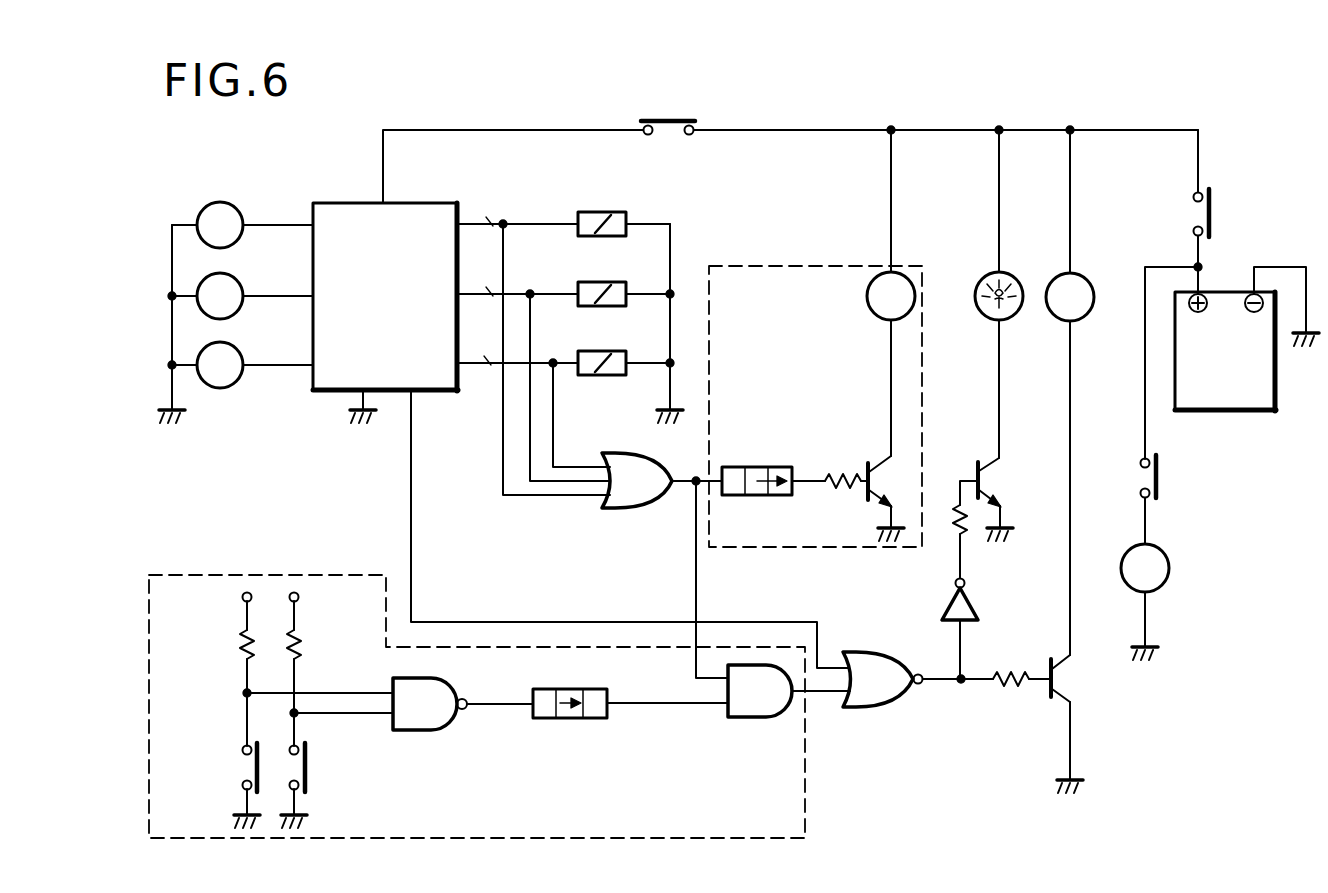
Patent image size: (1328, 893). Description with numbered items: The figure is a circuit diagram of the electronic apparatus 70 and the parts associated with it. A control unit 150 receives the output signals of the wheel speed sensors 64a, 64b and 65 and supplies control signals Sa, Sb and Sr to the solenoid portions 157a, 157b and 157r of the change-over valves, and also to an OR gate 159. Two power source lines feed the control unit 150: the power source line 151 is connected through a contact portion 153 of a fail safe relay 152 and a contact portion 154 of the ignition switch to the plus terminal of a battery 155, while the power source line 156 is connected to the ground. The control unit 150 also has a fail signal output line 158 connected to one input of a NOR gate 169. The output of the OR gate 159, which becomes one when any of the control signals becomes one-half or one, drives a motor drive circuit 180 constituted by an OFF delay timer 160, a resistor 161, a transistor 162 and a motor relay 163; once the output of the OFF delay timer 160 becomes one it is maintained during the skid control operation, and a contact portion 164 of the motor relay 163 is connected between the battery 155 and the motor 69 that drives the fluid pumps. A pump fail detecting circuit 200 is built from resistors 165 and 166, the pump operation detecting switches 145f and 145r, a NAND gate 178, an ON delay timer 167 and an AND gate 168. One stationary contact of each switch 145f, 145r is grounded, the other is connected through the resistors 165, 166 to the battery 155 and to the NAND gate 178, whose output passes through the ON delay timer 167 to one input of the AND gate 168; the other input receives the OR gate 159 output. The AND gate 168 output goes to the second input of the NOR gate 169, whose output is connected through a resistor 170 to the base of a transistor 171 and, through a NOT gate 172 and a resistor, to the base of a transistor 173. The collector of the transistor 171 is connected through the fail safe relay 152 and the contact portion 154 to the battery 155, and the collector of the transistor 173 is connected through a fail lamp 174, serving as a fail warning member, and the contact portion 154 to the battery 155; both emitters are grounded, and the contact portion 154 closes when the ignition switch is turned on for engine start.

The wheel speed sensor 64a is at (236, 209).
The wheel speed sensor 64b is at (236, 280).
The wheel speed sensor 65 is at (237, 349).
The motor 69 is at (1170, 568).
The electronic apparatus 70 is at (900, 117).
The pump operation detecting switch 145f is at (243, 752).
The pump operation detecting switch 145r is at (307, 757).
The control unit 150 is at (404, 201).
The power source line 151 is at (381, 168).
The fail safe relay 152 is at (1084, 280).
The contact portion of fail safe relay 153 is at (684, 119).
The contact portion of ignition switch 154 is at (1210, 194).
The battery 155 is at (1203, 413).
The power source line 156 is at (358, 401).
The solenoid portion 157a is at (607, 212).
The solenoid portion 157b is at (607, 282).
The solenoid portion 157r is at (607, 351).
The fail signal output line 158 is at (418, 402).
The OR gate 159 is at (615, 509).
The OFF delay timer 160 is at (752, 497).
The resistor 161 is at (838, 497).
The transistor 162 is at (877, 481).
The motor relay 163 is at (909, 280).
The contact portion of motor relay 164 is at (1158, 464).
The resistor 165 is at (237, 651).
The resistor 166 is at (305, 651).
The ON delay timer 167 is at (560, 720).
The AND gate 168 is at (748, 720).
The NOR gate 169 is at (865, 710).
The resistor 170 is at (1000, 690).
The transistor 171 is at (1058, 681).
The NOT gate 172 is at (978, 612).
The transistor 173 is at (986, 483).
The fail lamp 174 is at (1016, 279).
The NAND gate 178 is at (411, 732).
The motor drive circuit 180 is at (766, 263).
The pump fail detecting circuit 200 is at (298, 574).